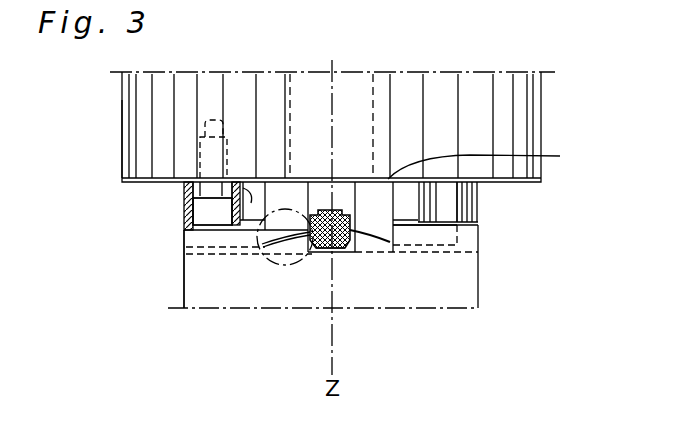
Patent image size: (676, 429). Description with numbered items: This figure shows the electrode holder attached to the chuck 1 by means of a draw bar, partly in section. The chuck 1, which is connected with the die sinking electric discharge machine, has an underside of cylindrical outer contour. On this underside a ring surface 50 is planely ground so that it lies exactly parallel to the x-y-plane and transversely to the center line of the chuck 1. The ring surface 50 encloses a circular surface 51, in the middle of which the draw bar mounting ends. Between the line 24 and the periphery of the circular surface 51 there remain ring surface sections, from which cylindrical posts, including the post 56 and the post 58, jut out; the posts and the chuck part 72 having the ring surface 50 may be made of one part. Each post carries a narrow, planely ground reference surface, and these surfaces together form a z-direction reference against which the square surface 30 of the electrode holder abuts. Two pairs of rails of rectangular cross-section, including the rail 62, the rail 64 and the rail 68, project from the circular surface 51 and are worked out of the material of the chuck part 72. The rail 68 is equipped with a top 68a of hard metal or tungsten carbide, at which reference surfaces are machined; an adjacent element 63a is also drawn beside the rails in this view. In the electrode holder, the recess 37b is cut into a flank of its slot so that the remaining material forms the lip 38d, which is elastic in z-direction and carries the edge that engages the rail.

The chuck 1 is at (534, 137).
The line 24 is at (465, 287).
The square surface 30 is at (215, 236).
The recess 37b is at (267, 252).
The lip 38d is at (293, 233).
The ring surface 50 is at (516, 182).
The circular surface 51 is at (560, 156).
The post 56 is at (184, 200).
The post 58 is at (477, 208).
The rail 62 is at (407, 198).
The holder 63a is at (412, 223).
The rail 64 is at (183, 188).
The rail 68 is at (343, 250).
The top 68a is at (318, 252).
The chuck part 72 is at (122, 157).